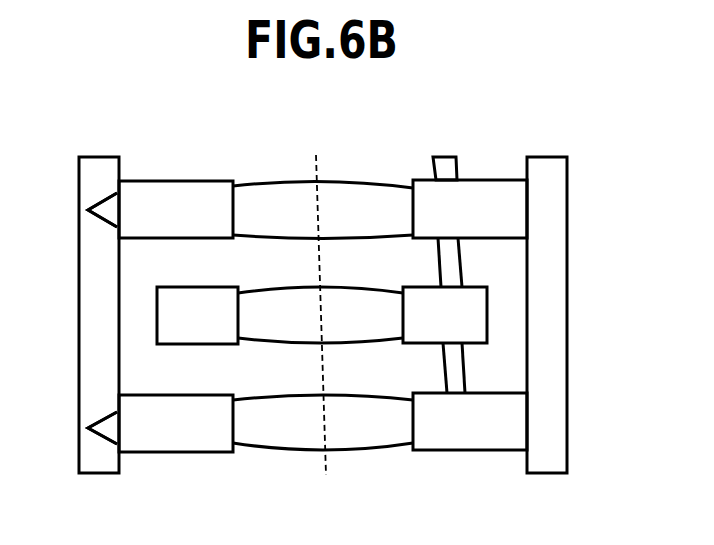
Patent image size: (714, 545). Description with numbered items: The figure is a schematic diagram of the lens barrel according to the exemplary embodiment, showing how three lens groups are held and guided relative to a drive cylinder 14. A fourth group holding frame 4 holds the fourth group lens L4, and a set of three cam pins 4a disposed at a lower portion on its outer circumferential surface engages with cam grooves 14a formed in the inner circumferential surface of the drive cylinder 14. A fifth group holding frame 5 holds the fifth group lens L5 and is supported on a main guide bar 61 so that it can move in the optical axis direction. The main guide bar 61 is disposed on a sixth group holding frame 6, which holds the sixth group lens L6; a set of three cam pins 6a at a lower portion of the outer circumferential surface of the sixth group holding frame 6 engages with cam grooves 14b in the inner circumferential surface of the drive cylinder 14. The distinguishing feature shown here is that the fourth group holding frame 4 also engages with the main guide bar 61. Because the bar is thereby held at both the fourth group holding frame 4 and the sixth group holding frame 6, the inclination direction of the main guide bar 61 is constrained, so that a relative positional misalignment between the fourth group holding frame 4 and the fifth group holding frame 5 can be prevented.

The drive cylinder 14 is at (101, 165).
The cam pins 4a is at (108, 205).
The cam grooves 14a is at (105, 223).
The fourth group lens L4 is at (365, 193).
The fourth group holding frame 4 is at (515, 210).
The main guide bar 61 is at (452, 265).
The fifth group lens L5 is at (385, 316).
The fifth group holding frame 5 is at (477, 332).
The sixth group lens L6 is at (385, 427).
The sixth group holding frame 6 is at (502, 433).
The cam pins 6a is at (108, 420).
The cam grooves 14b is at (105, 438).